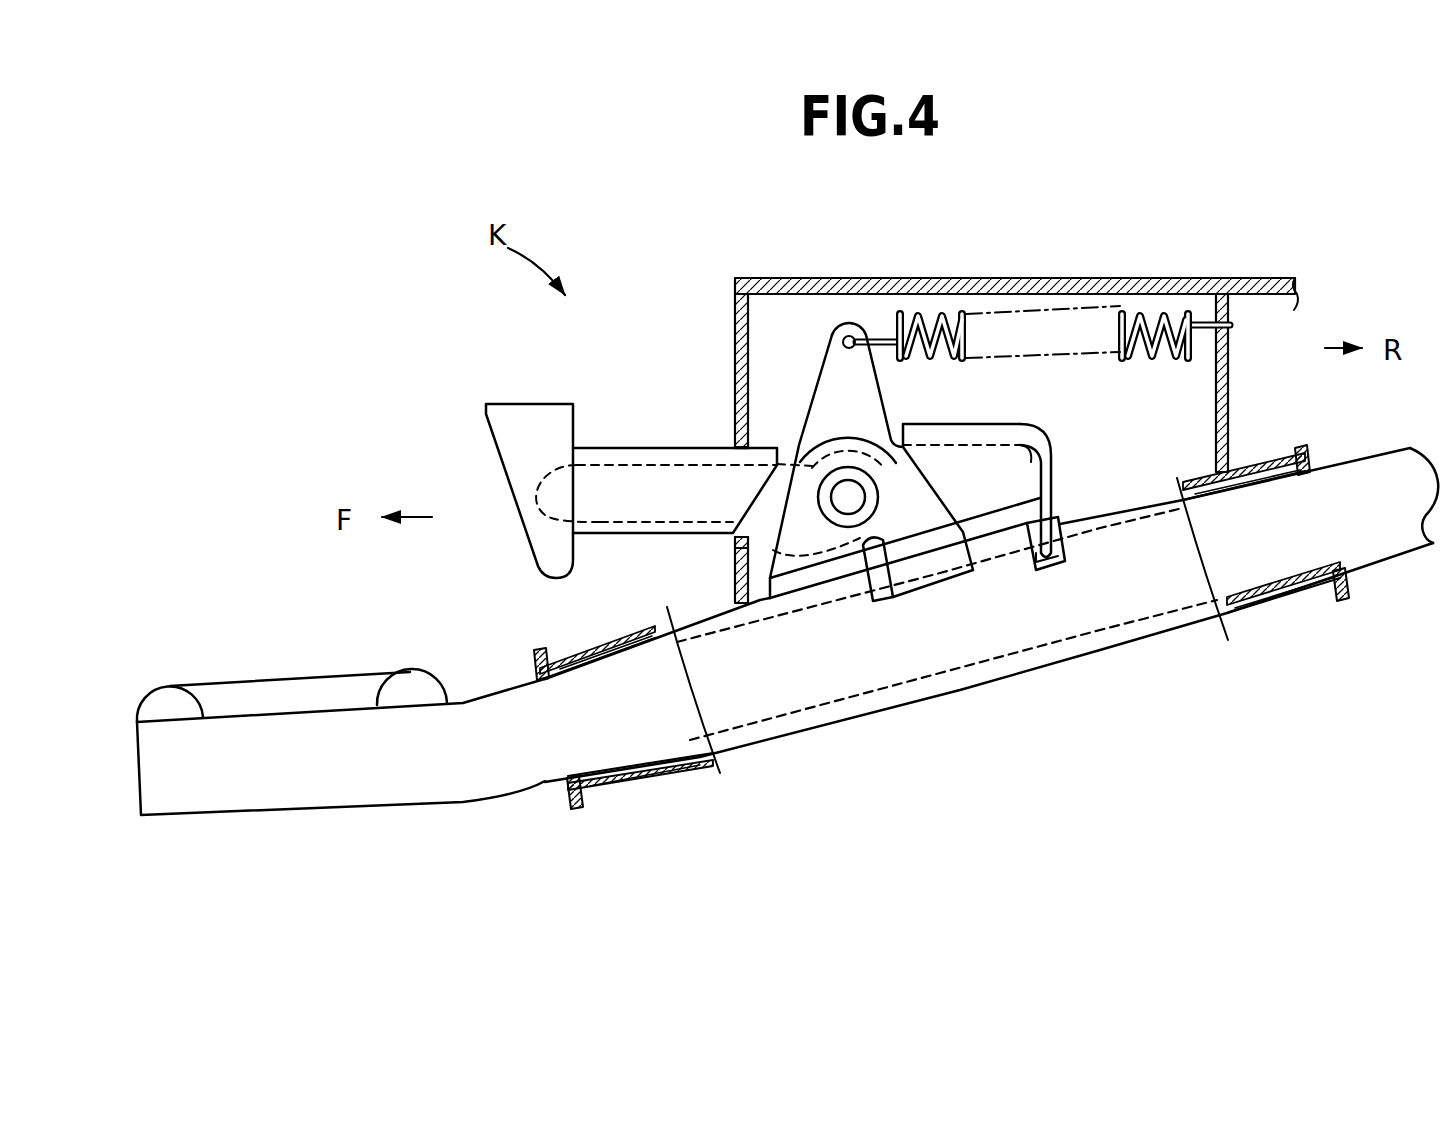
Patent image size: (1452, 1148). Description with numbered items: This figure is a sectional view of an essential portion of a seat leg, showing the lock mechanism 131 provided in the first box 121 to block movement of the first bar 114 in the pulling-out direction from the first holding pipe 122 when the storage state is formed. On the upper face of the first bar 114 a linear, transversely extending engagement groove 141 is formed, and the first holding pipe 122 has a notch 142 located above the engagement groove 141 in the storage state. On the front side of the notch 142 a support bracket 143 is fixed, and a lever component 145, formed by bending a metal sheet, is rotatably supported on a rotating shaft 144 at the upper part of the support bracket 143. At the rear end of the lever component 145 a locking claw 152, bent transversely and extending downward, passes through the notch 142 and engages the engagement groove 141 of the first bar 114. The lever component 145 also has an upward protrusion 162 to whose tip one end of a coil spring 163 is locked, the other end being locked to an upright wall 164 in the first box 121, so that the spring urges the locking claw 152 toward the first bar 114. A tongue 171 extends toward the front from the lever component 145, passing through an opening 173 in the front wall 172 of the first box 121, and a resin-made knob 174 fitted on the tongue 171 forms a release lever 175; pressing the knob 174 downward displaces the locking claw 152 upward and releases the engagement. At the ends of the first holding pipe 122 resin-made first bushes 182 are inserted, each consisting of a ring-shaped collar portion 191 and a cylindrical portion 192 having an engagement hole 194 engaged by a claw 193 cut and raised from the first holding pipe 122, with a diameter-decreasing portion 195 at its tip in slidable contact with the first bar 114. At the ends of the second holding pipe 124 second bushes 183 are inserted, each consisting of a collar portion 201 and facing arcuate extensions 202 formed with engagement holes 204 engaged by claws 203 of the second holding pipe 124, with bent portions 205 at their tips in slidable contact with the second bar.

The first bar 114 is at (880, 690).
The first box 121 is at (979, 389).
The first holding pipe 122 is at (930, 710).
The second holding pipe 124 is at (692, 828).
The lock mechanism 131 is at (822, 401).
The engagement groove 141 is at (1055, 518).
The notch 142 is at (1033, 530).
The support bracket 143 is at (760, 570).
The rotating shaft 144 is at (847, 488).
The lever component 145 is at (788, 448).
The locking claw 152 is at (1055, 437).
The protrusion 162 is at (810, 354).
The coil spring 163 is at (903, 305).
The upright wall 164 is at (1231, 345).
The tongue 171 is at (630, 478).
The front wall 172 is at (733, 291).
The opening 173 is at (733, 540).
The knob 174 is at (555, 410).
The release lever 175 is at (468, 368).
The first bush 182 is at (1295, 524).
The second bush 183 is at (578, 731).
The collar portion 191 is at (1311, 447).
The cylindrical portion 192 is at (1286, 455).
The claw 193 is at (1237, 470).
The engagement hole 194 is at (1293, 545).
The diameter-decreasing portion 195 is at (1200, 472).
The collar portion 201 is at (553, 800).
The extension 202 is at (537, 650).
The claw 203 is at (600, 648).
The engagement hole 204 is at (566, 652).
The bent portion 205 is at (645, 655).